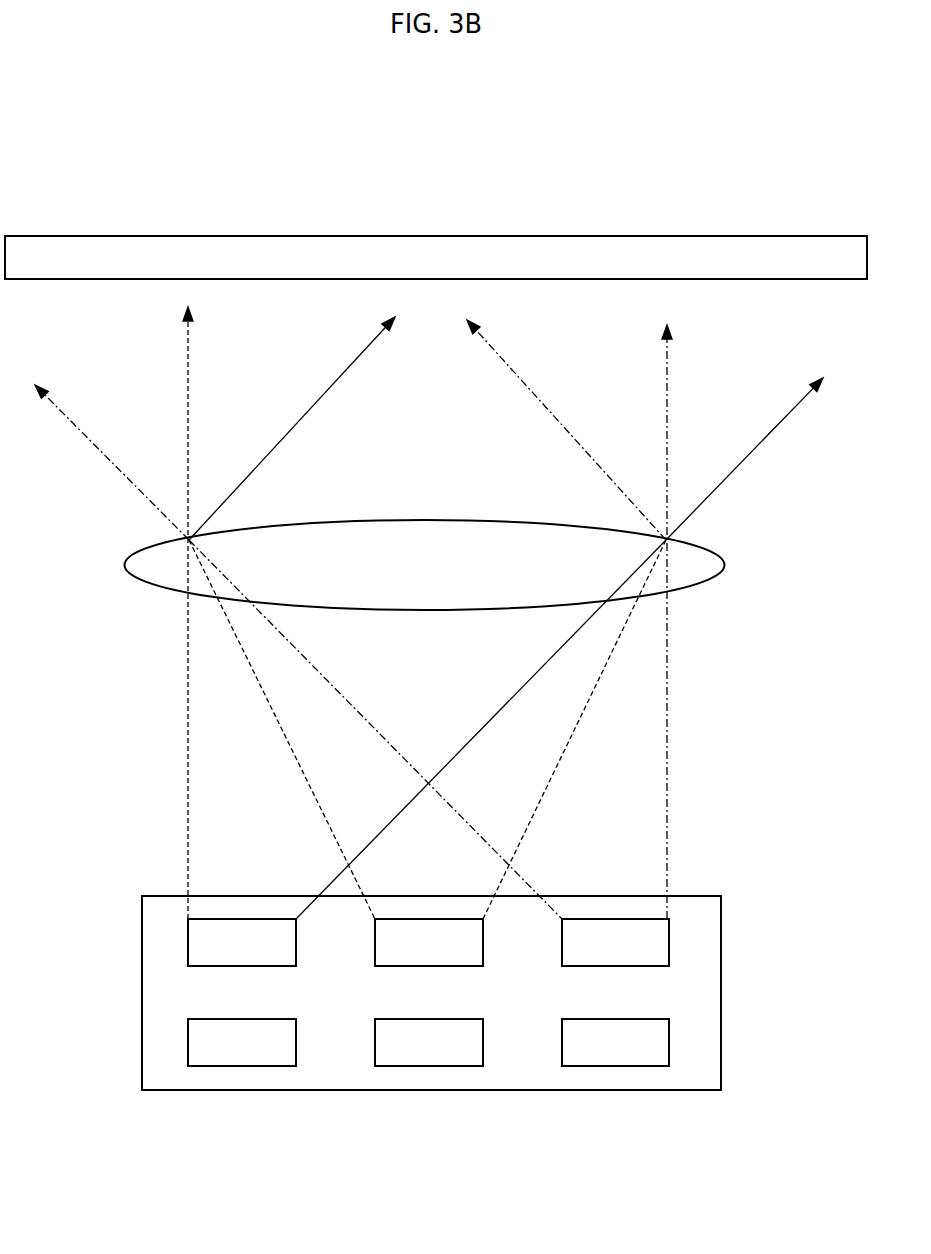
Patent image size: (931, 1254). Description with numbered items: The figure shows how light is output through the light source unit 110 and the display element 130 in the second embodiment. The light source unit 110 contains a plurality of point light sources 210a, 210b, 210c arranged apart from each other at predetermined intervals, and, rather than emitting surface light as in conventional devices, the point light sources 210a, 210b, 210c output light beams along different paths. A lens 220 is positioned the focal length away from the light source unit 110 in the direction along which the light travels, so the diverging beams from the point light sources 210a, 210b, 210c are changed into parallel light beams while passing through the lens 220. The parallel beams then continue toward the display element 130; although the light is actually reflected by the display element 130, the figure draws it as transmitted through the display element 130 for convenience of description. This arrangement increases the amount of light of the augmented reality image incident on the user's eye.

The display element 130 is at (100, 237).
The lens 220 is at (450, 565).
The light source unit 110 is at (432, 974).
The point light source 210a is at (191, 942).
The point light source 210b is at (429, 913).
The point light source 210c is at (668, 942).